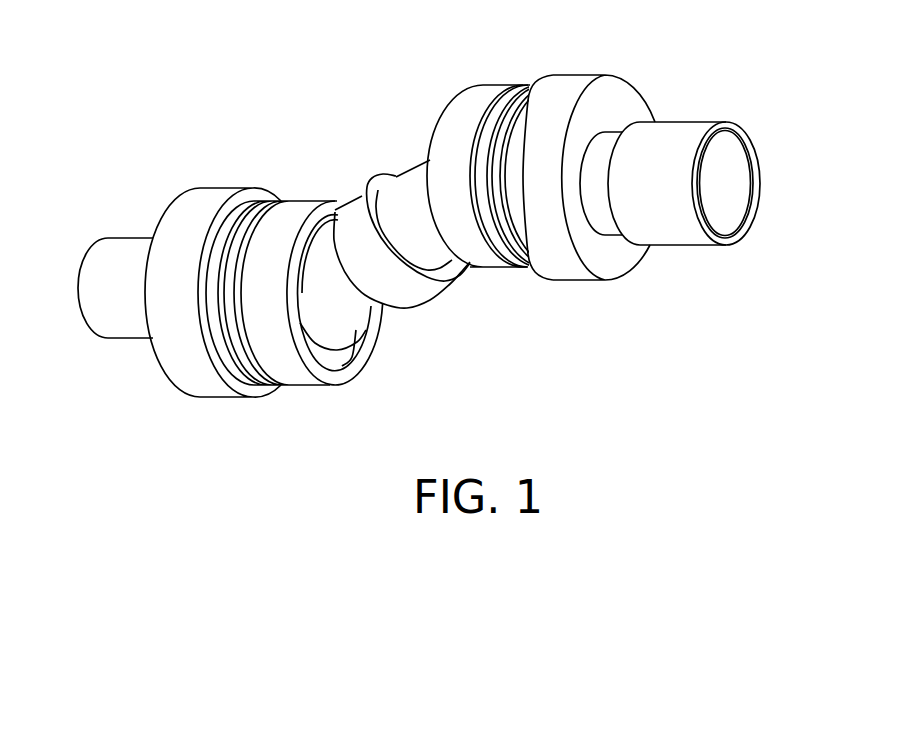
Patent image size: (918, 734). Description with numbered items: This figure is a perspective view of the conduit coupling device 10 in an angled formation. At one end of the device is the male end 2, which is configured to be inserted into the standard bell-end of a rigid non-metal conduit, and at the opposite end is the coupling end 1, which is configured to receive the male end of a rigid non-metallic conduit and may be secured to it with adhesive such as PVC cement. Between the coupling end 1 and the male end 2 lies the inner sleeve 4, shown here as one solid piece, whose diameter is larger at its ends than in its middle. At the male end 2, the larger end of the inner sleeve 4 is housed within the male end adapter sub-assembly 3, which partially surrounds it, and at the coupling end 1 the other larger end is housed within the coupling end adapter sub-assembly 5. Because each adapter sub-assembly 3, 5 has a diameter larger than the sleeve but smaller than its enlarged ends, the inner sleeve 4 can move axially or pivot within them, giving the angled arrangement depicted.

The coupling end 1 is at (713, 122).
The male end 2 is at (108, 238).
The male end adapter sub-assembly 3 is at (218, 188).
The inner sleeve 4 is at (488, 313).
The coupling end adapter sub-assembly 5 is at (573, 75).
The pipe coupling assembly 10 is at (770, 287).